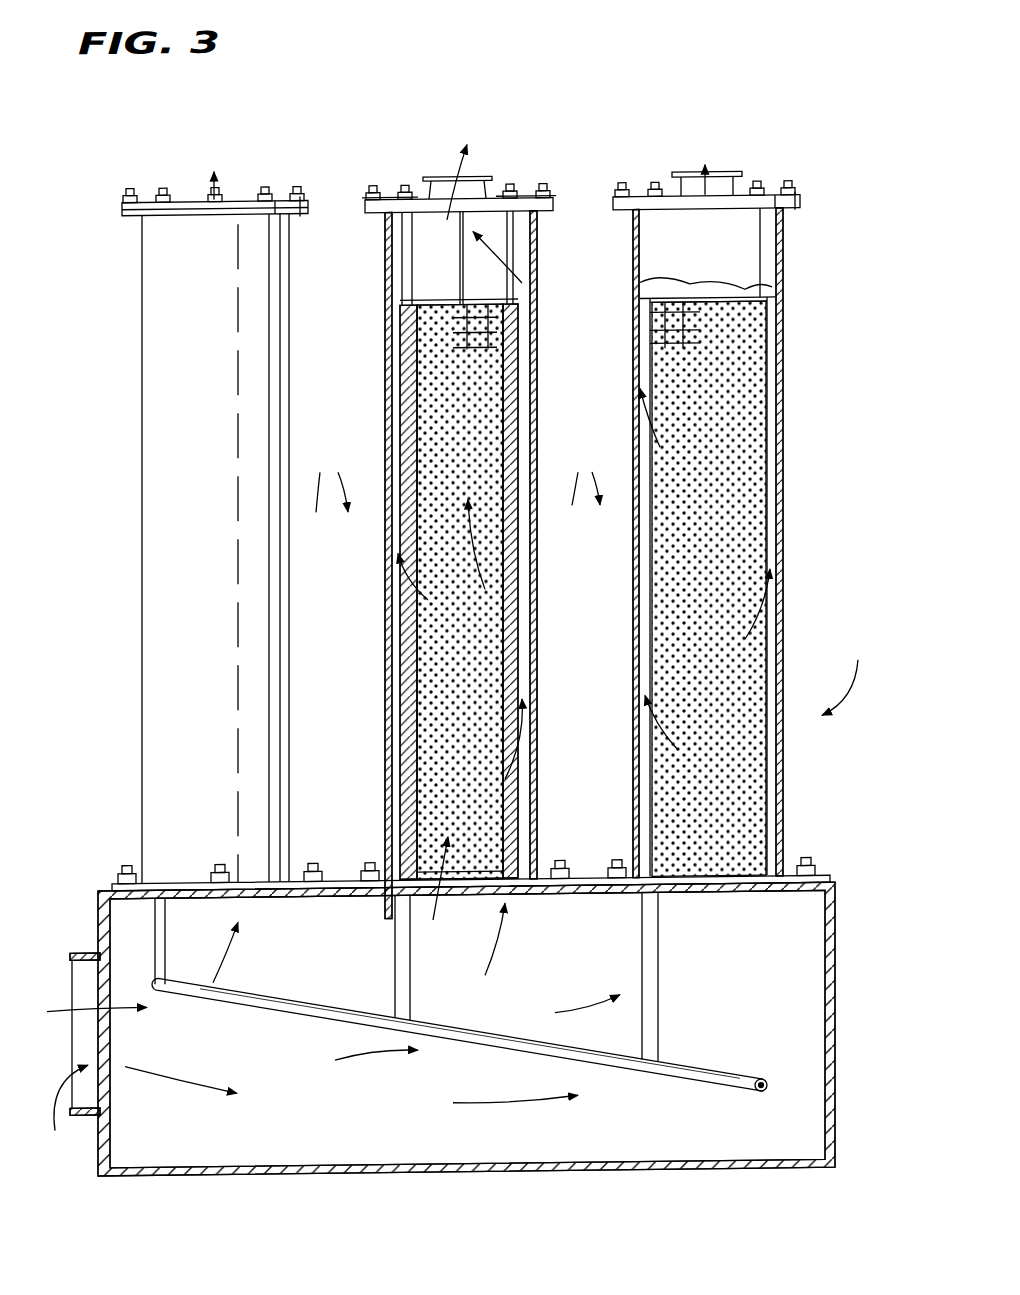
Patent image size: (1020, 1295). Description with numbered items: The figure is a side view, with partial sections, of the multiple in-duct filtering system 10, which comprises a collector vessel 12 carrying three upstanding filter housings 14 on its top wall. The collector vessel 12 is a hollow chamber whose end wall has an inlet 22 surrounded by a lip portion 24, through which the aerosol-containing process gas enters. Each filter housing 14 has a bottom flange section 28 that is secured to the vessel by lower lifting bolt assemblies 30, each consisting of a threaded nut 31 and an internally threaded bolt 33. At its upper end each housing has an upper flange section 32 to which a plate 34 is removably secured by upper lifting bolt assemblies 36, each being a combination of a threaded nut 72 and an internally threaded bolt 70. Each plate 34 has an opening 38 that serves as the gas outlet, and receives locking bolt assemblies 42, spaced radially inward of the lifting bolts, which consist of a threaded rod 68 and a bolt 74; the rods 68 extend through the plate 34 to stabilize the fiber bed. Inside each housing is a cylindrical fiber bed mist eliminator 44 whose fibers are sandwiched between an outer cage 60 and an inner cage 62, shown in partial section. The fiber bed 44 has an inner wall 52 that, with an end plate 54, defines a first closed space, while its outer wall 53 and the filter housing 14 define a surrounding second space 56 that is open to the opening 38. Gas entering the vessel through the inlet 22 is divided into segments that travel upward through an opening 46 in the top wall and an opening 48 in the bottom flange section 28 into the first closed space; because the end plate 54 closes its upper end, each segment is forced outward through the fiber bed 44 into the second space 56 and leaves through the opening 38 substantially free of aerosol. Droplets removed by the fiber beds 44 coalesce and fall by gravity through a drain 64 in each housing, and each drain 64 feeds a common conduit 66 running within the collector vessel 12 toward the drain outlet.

The multiple in-duct filtering system 10 is at (878, 665).
The collector vessel 12 is at (833, 1047).
The filter housing 14 is at (376, 525).
The inlet 22 is at (67, 1113).
The lip portion 24 is at (75, 958).
The bottom flange section 28 is at (112, 895).
The lower lifting bolt assembly 30 is at (130, 866).
The threaded nut 31 is at (125, 866).
The upper flange section 32 is at (122, 213).
The internally threaded bolt 33 is at (115, 886).
The plate 34 is at (122, 206).
The upper lifting bolt assembly 36 is at (130, 189).
The opening 38 is at (472, 197).
The locking bolt assembly 42 is at (163, 189).
The fiber bed mist eliminator 44 is at (415, 644).
The opening 46 is at (420, 907).
The opening 48 is at (457, 244).
The inner wall 52 is at (420, 749).
The outer wall 53 is at (655, 554).
The end plate 54 is at (430, 397).
The second space 56 is at (392, 399).
The outer cage 60 is at (662, 337).
The inner cage 62 is at (505, 330).
The drain 64 is at (160, 915).
The common conduit 66 is at (612, 1074).
The threaded rod 68 is at (402, 266).
The internally threaded bolt 70 is at (800, 214).
The threaded nut 72 is at (797, 202).
The bolt 74 is at (398, 198).